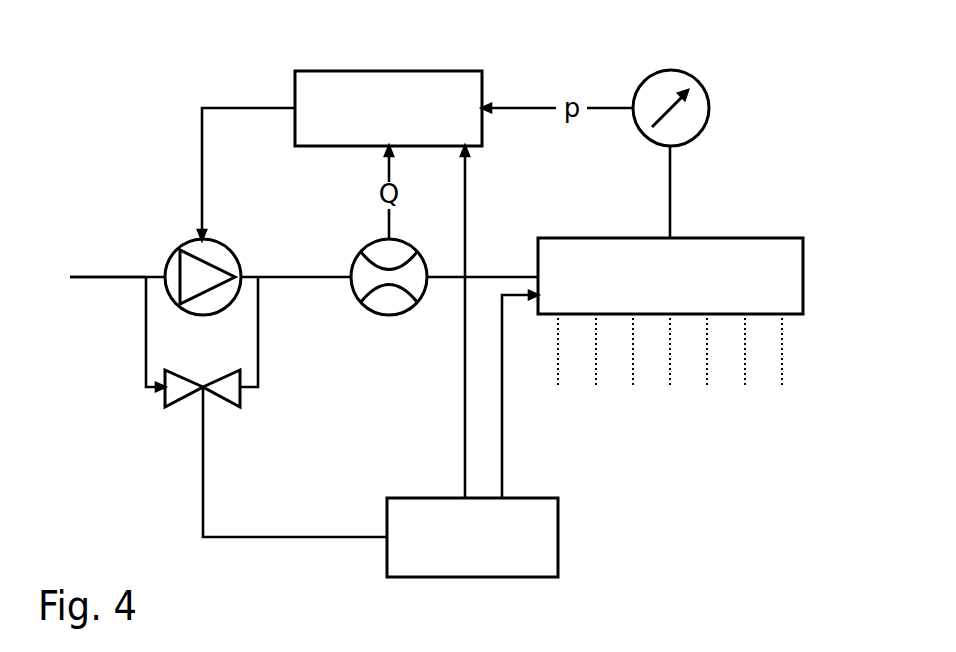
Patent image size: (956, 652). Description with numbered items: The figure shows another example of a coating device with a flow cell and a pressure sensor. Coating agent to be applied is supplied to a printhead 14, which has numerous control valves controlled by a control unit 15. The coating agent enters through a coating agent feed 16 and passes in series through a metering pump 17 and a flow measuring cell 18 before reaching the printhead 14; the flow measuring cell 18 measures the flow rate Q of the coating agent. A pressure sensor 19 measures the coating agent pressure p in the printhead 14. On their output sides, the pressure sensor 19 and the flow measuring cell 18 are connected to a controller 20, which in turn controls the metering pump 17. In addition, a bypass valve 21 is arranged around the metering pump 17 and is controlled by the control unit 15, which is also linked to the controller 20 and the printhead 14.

The printhead 14 is at (750, 238).
The control unit 15 is at (462, 578).
The coating agent feed 16 is at (123, 277).
The metering pump 17 is at (213, 315).
The flow measuring cell 18 is at (390, 315).
The pressure sensor 19 is at (658, 68).
The controller 20 is at (397, 70).
The bypass valve 21 is at (183, 400).